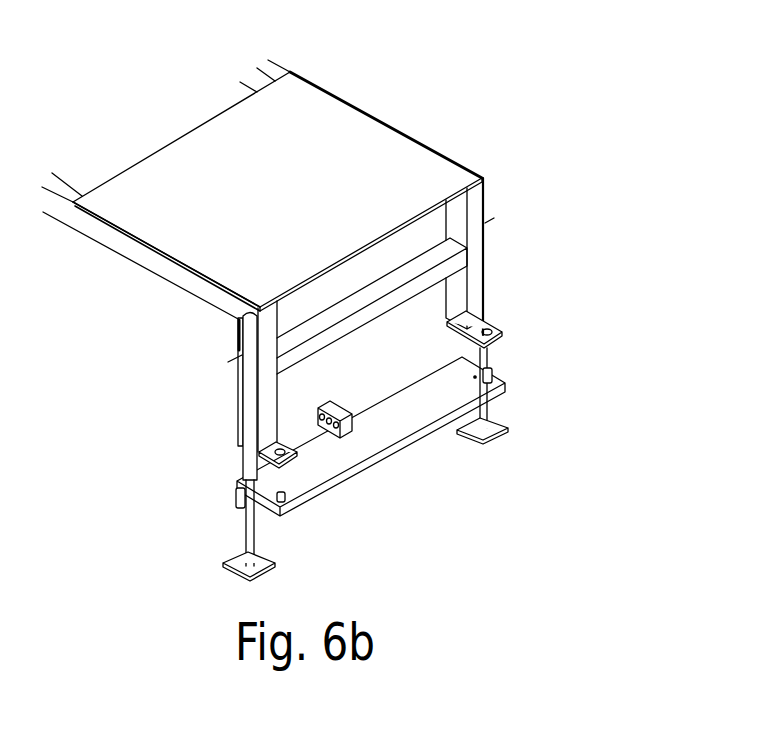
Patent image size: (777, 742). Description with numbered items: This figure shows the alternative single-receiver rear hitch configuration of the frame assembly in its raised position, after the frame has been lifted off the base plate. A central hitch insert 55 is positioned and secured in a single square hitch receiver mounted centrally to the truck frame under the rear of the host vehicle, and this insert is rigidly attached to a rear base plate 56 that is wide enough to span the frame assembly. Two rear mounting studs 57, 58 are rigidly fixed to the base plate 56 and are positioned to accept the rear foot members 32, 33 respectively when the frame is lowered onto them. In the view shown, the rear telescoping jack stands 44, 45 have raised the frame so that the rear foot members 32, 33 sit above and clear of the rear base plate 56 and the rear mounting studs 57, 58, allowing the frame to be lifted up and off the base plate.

The rear foot member 32 is at (295, 457).
The rear foot member 33 is at (502, 332).
The rear telescoping jack stand 44 is at (247, 392).
The rear telescoping jack stand 45 is at (487, 252).
The central hitch insert 55 is at (340, 403).
The rear base plate 56 is at (392, 432).
The rear mounting stud 57 is at (285, 505).
The rear mounting stud 58 is at (498, 383).